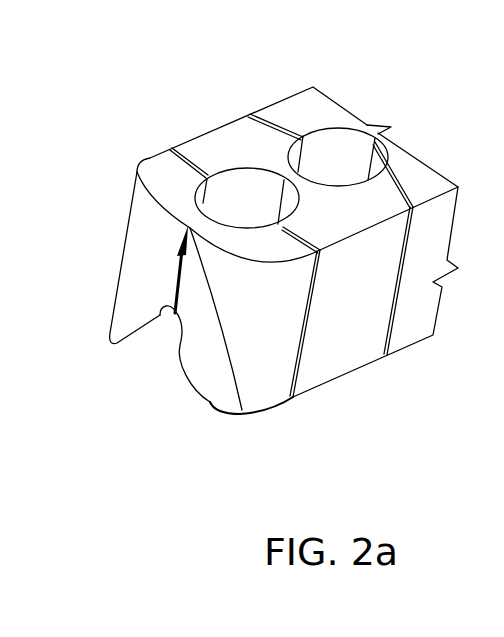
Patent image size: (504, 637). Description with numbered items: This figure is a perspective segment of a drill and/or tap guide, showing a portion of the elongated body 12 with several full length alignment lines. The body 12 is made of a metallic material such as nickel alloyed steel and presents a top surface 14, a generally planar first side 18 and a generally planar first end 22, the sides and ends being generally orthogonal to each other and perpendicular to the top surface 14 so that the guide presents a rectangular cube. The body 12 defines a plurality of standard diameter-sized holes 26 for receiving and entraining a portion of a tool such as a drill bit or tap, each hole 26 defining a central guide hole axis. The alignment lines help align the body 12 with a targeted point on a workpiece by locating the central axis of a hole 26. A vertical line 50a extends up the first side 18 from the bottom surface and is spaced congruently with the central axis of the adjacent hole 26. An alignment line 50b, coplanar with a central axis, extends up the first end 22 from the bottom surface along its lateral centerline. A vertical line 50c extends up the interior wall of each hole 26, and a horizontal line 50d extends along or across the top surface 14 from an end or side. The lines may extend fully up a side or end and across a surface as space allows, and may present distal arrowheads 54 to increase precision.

The elongated body 12 is at (405, 86).
The top surface 14 is at (313, 110).
The first side 18 is at (376, 312).
The first end 22 is at (192, 322).
The hole 26 is at (261, 212).
The vertical line 50a is at (305, 355).
The alignment line 50b is at (175, 291).
The vertical line 50c is at (207, 200).
The horizontal line 50d is at (295, 168).
The distal arrowhead 54 is at (242, 412).